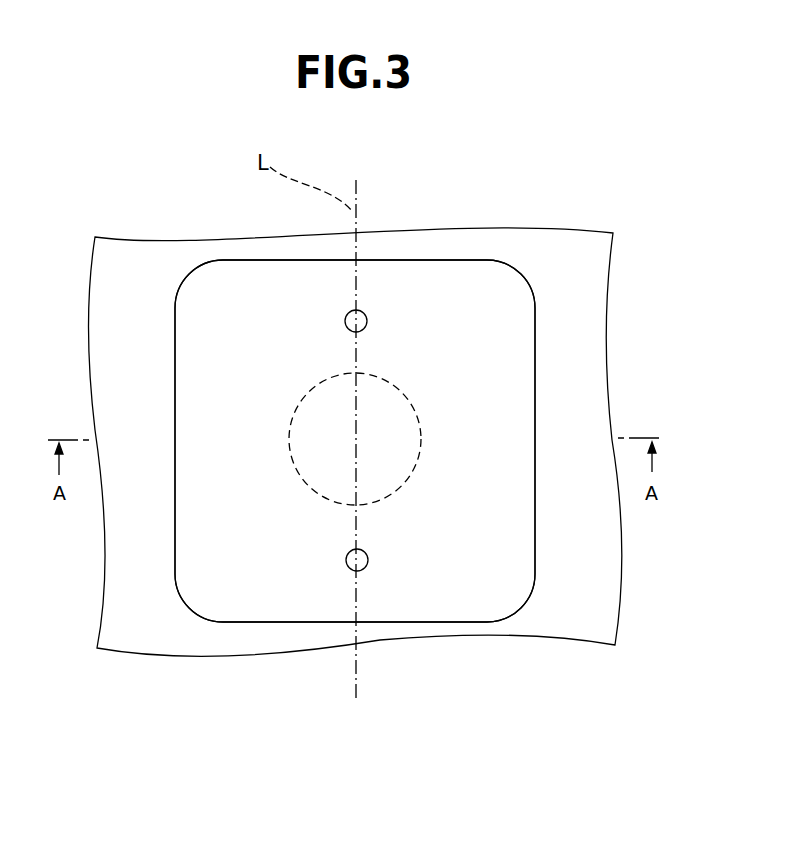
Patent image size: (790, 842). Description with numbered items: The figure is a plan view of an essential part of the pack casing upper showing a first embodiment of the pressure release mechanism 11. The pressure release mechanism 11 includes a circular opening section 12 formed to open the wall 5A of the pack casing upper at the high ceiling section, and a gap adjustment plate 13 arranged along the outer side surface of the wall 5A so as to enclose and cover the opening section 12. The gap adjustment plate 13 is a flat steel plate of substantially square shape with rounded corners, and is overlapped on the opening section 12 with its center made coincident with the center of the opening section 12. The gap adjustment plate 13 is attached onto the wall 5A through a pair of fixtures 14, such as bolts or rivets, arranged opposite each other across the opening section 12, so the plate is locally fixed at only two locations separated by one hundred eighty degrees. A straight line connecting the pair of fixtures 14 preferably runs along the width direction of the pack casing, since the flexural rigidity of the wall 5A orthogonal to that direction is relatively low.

The wall 5A is at (603, 592).
The pressure release mechanism 11 is at (173, 557).
The opening section 12 is at (385, 392).
The gap adjustment plate 13 is at (268, 320).
The fixtures 14 is at (358, 314).